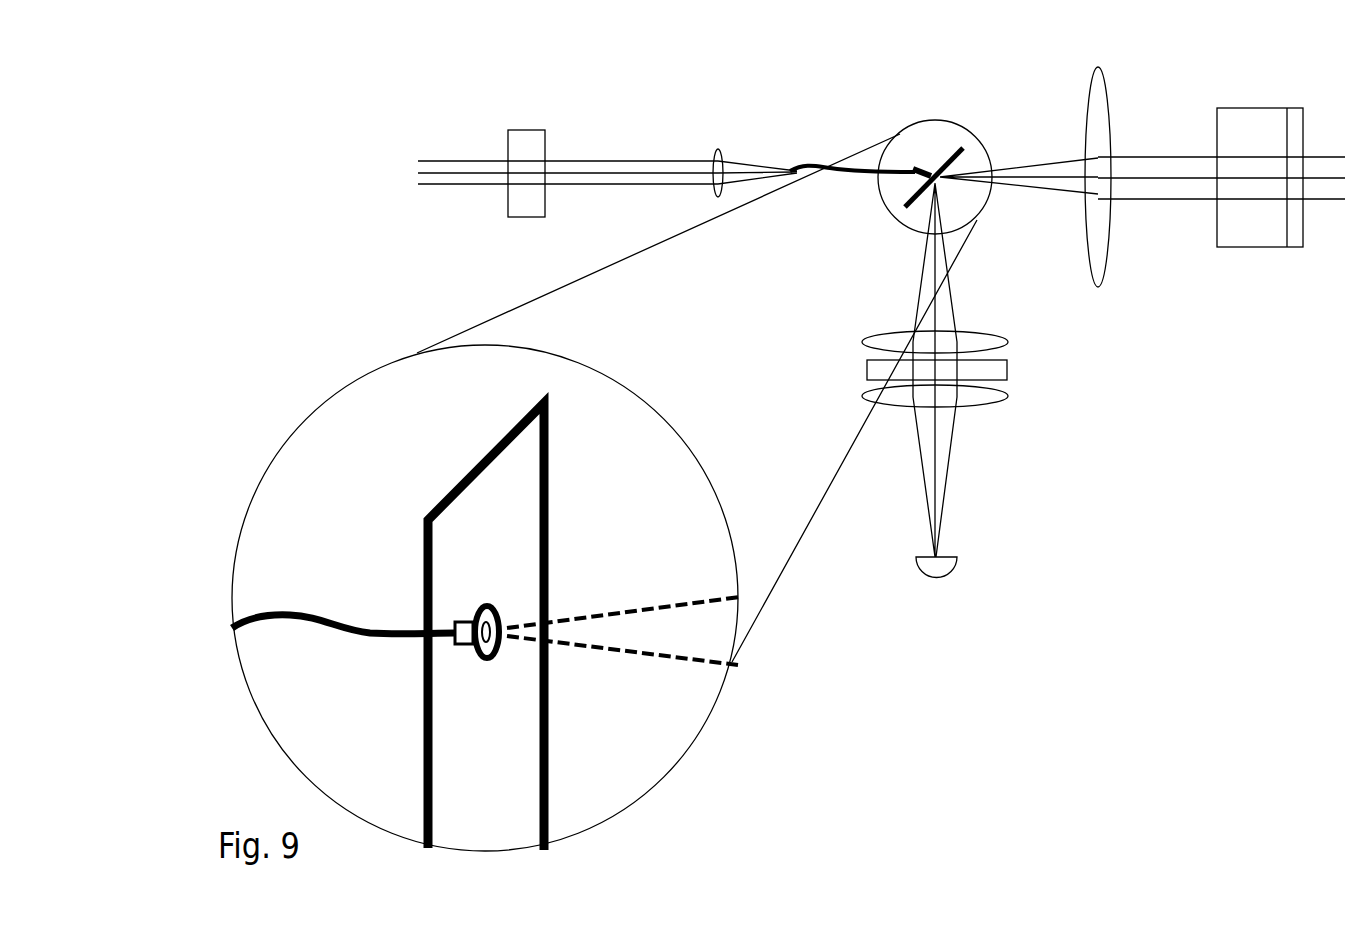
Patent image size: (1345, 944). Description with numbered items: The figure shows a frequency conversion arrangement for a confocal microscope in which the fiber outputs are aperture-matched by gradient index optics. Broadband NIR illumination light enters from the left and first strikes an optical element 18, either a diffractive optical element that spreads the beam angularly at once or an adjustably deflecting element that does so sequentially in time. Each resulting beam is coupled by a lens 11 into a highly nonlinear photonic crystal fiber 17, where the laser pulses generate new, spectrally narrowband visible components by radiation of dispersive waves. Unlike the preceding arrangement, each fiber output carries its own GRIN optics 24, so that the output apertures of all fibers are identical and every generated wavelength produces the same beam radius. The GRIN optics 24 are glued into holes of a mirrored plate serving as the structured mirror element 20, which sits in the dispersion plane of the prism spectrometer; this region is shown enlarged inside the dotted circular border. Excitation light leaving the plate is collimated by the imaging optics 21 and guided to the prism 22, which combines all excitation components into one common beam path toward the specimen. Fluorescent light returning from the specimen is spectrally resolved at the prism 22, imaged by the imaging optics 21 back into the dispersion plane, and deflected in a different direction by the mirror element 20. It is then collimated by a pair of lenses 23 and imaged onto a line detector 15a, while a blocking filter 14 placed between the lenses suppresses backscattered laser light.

The optical element 18 is at (529, 98).
The lens 11 is at (718, 150).
The photonic crystal fiber 17 is at (858, 168).
The microstructured mirror element 20 is at (940, 148).
The GRIN optics 24 is at (463, 645).
The imaging optics 21 is at (1093, 72).
The prism 22 is at (1250, 108).
The pair of lenses 23 is at (1008, 341).
The blocking filter 14 is at (1008, 370).
The line detector 15a is at (955, 566).